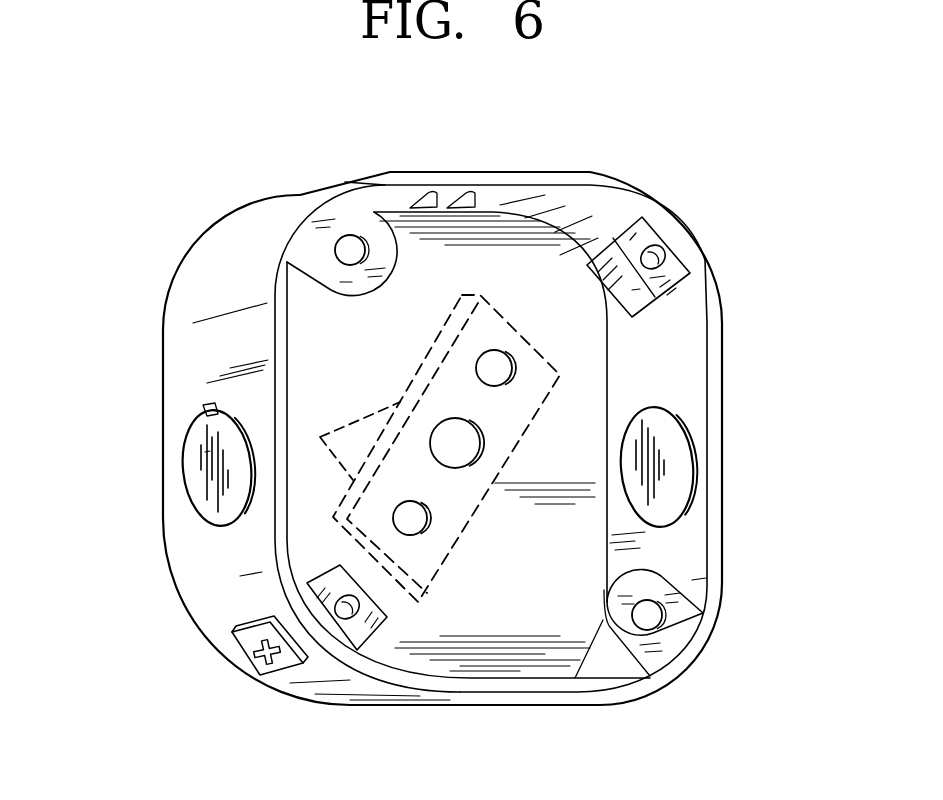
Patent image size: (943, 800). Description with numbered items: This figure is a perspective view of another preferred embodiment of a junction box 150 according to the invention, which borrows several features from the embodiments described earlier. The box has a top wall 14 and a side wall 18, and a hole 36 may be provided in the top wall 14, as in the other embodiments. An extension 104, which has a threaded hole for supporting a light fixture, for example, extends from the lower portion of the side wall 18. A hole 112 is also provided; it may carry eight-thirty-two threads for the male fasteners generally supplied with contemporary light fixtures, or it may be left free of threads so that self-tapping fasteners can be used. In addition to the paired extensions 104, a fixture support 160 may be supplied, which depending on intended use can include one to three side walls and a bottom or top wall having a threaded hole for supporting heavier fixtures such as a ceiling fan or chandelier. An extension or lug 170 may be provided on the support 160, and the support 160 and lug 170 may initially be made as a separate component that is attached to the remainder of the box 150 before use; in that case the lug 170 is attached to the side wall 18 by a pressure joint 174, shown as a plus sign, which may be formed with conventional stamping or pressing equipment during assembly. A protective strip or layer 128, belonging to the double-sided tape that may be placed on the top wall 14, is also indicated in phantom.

The junction box 150 is at (742, 279).
The side wall 18 is at (230, 352).
The top wall 14 is at (551, 568).
The protective strip or layer 128 is at (350, 447).
The hole 36 is at (505, 362).
The extension 104 is at (676, 570).
The hole 112 is at (350, 236).
The fixture support 160 is at (604, 235).
The extension or lug 170 is at (265, 667).
The pressure joint 174 is at (263, 660).